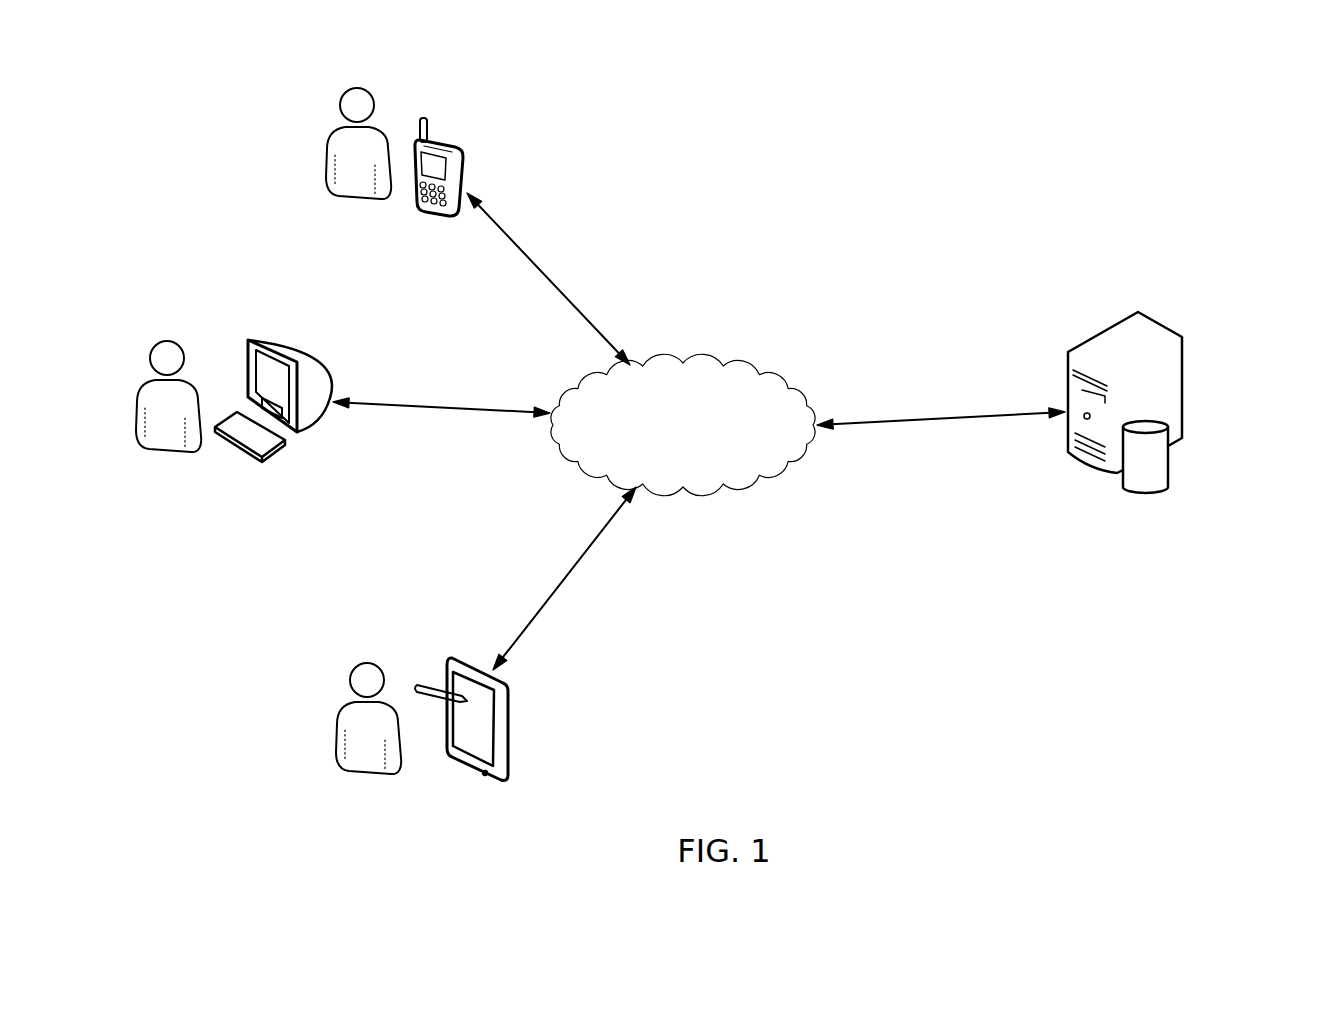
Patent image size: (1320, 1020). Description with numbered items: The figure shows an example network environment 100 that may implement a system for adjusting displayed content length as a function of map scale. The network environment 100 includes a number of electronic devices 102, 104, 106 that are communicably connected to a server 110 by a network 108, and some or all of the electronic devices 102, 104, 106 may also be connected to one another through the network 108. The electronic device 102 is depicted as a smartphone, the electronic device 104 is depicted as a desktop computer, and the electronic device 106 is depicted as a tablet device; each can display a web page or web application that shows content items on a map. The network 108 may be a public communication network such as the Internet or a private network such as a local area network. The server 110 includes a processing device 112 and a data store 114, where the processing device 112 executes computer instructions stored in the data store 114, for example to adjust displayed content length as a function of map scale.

The network environment 100 is at (857, 282).
The electronic device 102 is at (450, 138).
The electronic device 104 is at (300, 344).
The electronic device 106 is at (455, 655).
The network 108 is at (718, 363).
The server 110 is at (1131, 394).
The processing device 112 is at (1160, 322).
The data store 114 is at (1170, 473).